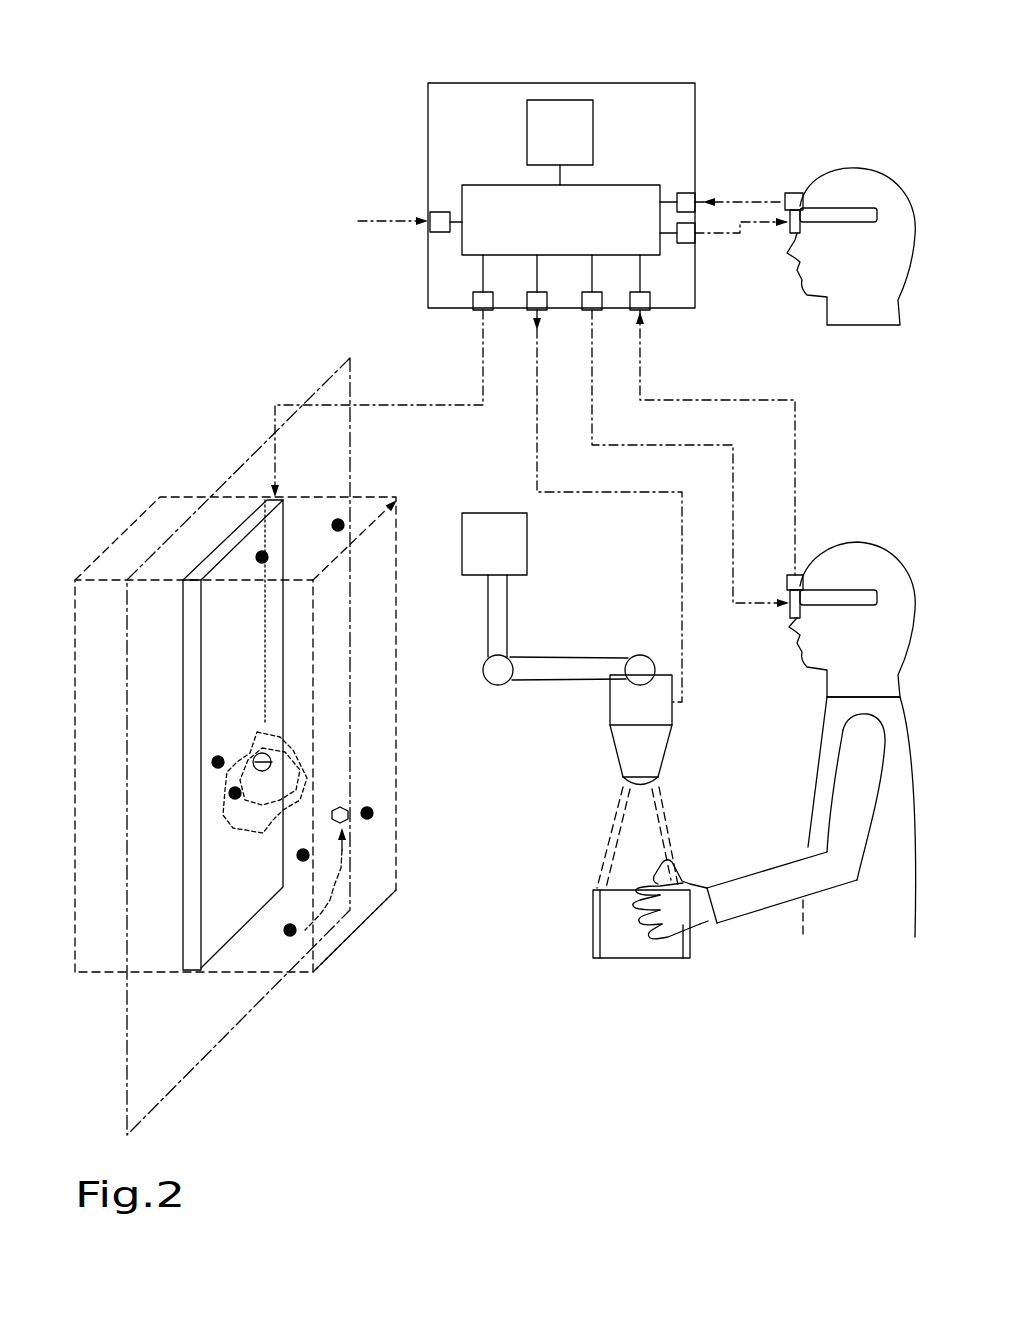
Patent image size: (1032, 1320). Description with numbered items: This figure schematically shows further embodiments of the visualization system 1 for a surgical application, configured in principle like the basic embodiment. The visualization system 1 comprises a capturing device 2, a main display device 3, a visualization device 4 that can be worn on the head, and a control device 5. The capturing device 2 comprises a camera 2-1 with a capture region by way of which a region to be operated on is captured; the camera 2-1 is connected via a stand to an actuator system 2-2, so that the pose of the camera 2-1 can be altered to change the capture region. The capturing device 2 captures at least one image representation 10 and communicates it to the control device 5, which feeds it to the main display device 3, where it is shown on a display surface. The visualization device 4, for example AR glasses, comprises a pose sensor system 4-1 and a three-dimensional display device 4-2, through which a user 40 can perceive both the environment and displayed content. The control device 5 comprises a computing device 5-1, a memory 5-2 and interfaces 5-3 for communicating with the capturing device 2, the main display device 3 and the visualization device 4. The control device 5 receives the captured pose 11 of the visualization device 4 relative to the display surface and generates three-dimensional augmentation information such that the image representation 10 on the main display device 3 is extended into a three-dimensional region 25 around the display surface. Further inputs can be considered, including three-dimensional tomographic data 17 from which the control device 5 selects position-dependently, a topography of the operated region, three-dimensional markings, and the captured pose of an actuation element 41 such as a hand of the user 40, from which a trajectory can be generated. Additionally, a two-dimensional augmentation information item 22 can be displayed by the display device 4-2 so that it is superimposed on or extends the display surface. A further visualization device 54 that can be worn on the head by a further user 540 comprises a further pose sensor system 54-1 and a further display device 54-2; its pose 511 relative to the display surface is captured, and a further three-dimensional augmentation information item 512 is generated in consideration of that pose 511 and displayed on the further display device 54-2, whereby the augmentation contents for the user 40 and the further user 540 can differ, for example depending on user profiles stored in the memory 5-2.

The visualization system 1 is at (242, 124).
The capturing device 2 is at (582, 783).
The camera 2-1 is at (633, 753).
The actuator system 2-2 is at (488, 513).
The main display device 3 is at (227, 542).
The visualization device that can be worn on the head 4 is at (832, 559).
The pose sensor system 4-1 is at (791, 575).
The display device 4-2 is at (792, 618).
The user 40 is at (880, 585).
The actuation element 41 is at (675, 870).
The control device 5 is at (458, 83).
The computing device 5-1 is at (462, 190).
The memory 5-2 is at (568, 100).
The interfaces 5-3 is at (527, 296).
The pose of the further visualization device 511 is at (738, 200).
The further three-dimensional augmentation information item 512 is at (718, 231).
The further visualization device that can be worn on the head 54 is at (825, 184).
The further pose sensor system 54-1 is at (795, 192).
The further display device 54-2 is at (793, 233).
The further user 540 is at (879, 205).
The image representation 10 is at (273, 452).
The captured pose 11 is at (796, 476).
The three-dimensional tomographic data 17 is at (385, 218).
The two-dimensional augmentation information item 22 is at (124, 632).
The three-dimensional region 25 is at (355, 934).